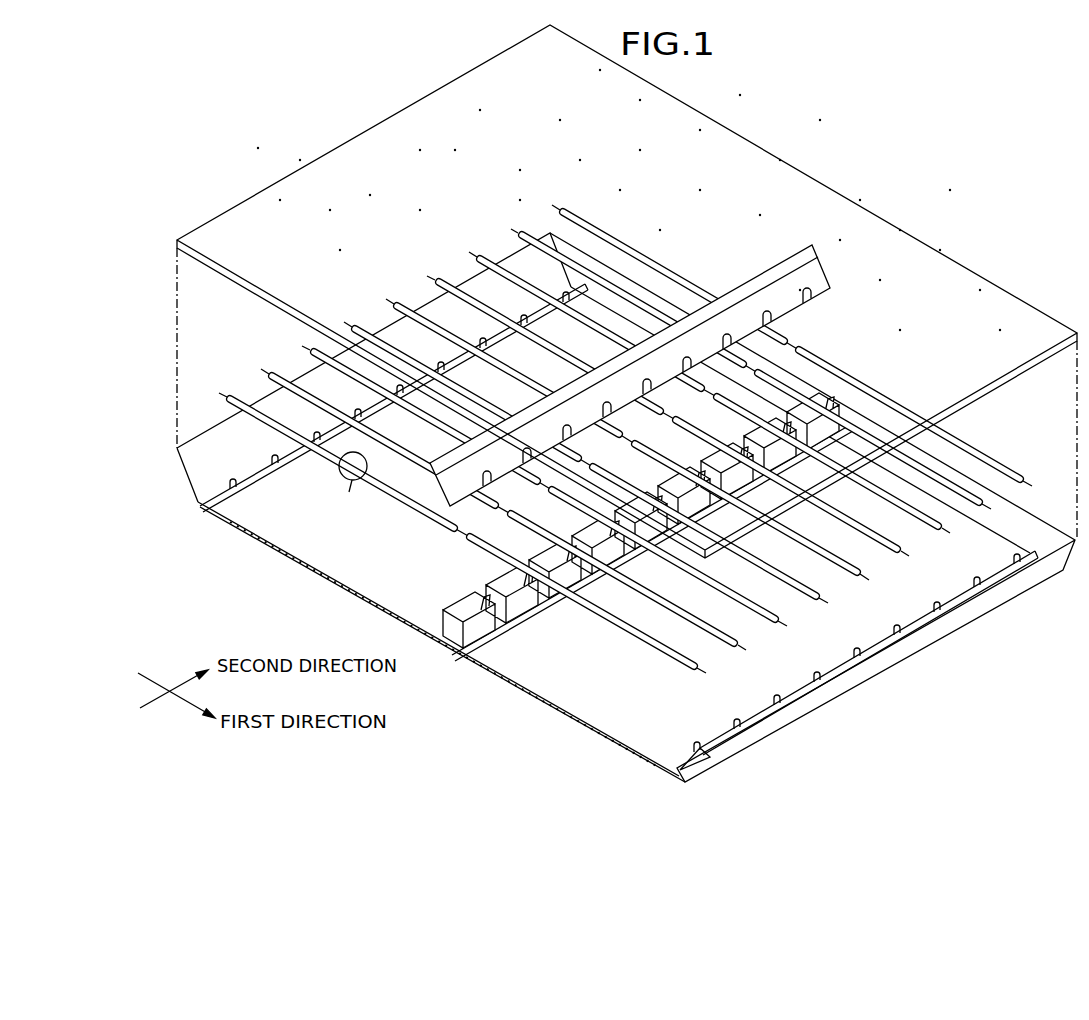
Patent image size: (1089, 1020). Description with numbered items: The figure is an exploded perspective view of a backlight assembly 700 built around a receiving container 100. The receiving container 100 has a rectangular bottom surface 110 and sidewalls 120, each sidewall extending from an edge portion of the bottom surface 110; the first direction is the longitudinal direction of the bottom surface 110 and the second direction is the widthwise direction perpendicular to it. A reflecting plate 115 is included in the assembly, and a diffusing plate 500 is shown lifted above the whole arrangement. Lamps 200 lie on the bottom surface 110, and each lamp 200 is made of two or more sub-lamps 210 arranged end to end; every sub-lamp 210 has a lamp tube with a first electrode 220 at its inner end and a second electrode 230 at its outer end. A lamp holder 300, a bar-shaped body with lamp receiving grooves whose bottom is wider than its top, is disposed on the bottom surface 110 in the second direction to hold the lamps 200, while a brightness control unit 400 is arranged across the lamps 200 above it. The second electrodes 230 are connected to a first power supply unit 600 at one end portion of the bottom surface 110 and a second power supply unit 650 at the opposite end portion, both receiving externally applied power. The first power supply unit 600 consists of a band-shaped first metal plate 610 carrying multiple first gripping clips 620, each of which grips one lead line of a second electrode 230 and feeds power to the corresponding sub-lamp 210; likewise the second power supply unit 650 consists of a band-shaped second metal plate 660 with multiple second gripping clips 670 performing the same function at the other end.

The receiving container 100 is at (170, 482).
The bottom surface 110 is at (376, 610).
The reflecting plate 115 is at (333, 580).
The sidewalls 120 is at (197, 447).
The lamps 200 is at (222, 383).
The sub-lamps 210 is at (238, 395).
The first electrode 220 is at (463, 536).
The second electrode 230 is at (222, 397).
The lamp holder 300 is at (498, 642).
The brightness control unit 400 is at (829, 257).
The diffusing plate 500 is at (426, 114).
The first power supply unit 600 is at (203, 580).
The first metal plate 610 is at (203, 505).
The first gripping clip 620 is at (232, 490).
The second power supply unit 650 is at (648, 692).
The second metal plate 660 is at (712, 740).
The second gripping clip 670 is at (688, 751).
The backlight assembly 700 is at (286, 136).